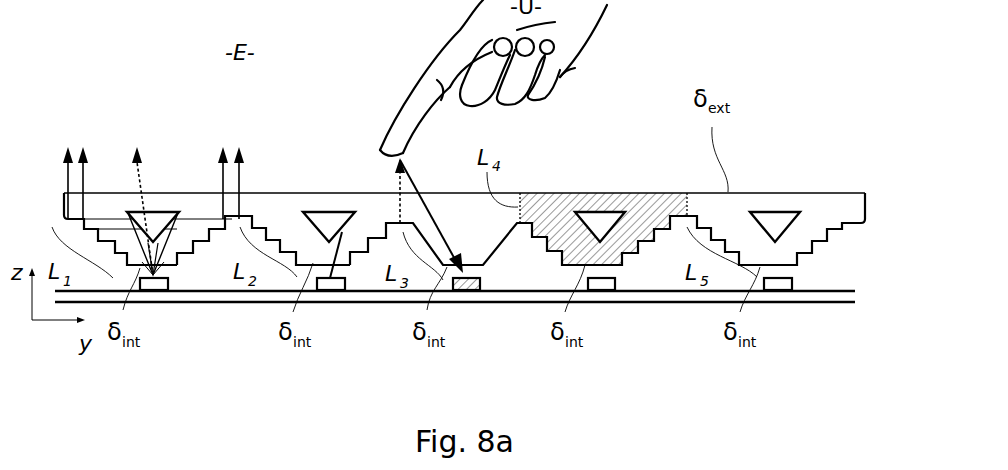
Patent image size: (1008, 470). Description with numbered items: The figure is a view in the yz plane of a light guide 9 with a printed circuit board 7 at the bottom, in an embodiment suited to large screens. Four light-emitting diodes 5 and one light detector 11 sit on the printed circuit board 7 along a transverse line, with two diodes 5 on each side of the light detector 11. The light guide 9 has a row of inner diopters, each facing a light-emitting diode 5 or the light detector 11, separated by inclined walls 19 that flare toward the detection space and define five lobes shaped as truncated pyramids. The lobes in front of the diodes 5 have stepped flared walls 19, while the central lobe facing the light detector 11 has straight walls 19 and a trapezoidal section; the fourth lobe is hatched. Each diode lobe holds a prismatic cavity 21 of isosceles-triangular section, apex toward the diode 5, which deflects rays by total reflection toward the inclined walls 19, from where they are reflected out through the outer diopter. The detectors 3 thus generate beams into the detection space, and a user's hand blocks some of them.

The detector 3 is at (78, 92).
The light-emitting diode 5 is at (155, 291).
The printed circuit board 7 is at (820, 302).
The light guide 9 is at (464, 229).
The light detector 11 is at (470, 292).
The inclined wall 19 is at (195, 260).
The prismatic cavity 21 is at (148, 210).